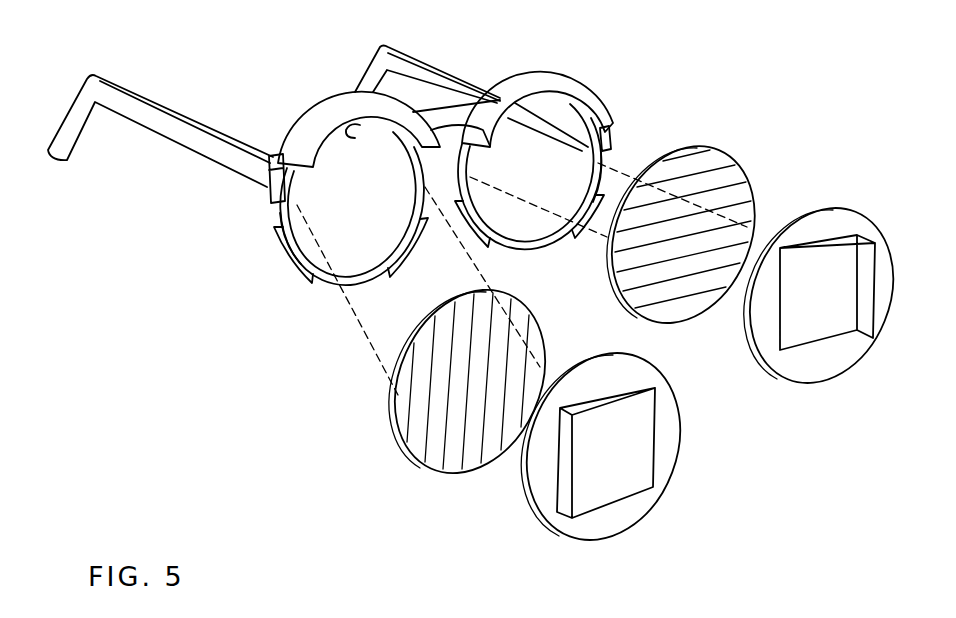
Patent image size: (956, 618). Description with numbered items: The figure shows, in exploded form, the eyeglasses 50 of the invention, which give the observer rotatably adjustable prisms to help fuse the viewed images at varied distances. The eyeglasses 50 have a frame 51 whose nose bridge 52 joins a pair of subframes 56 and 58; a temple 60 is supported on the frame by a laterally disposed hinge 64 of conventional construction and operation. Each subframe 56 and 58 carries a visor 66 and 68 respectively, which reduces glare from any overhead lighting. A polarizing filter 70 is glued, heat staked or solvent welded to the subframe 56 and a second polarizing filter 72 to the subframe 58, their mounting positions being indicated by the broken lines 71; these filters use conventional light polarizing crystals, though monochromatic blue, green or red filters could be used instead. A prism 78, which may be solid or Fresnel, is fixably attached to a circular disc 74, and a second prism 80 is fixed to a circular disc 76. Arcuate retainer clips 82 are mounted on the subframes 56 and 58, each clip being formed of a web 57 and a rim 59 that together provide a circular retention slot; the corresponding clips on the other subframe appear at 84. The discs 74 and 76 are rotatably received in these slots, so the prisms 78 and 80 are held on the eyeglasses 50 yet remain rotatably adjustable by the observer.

The eyeglasses 50 is at (624, 139).
The frame 51 is at (617, 173).
The nose bridge 52 is at (450, 117).
The subframe 56 is at (331, 282).
The web 57 is at (283, 248).
The subframe 58 is at (527, 250).
The rim 59 is at (313, 261).
The temple 60 is at (318, 117).
The hinge 64 is at (255, 153).
The visor 66 is at (321, 120).
The visor 68 is at (538, 78).
The polarizing filter 70 is at (443, 463).
The broken lines 71 is at (353, 313).
The polarizing filter 72 is at (727, 166).
The circular disc 74 is at (562, 523).
The circular disc 76 is at (793, 373).
The prism 78 is at (635, 449).
The prism 80 is at (813, 337).
The arcuate retainer clip 82 is at (287, 257).
The locking tabs 84 is at (474, 245).